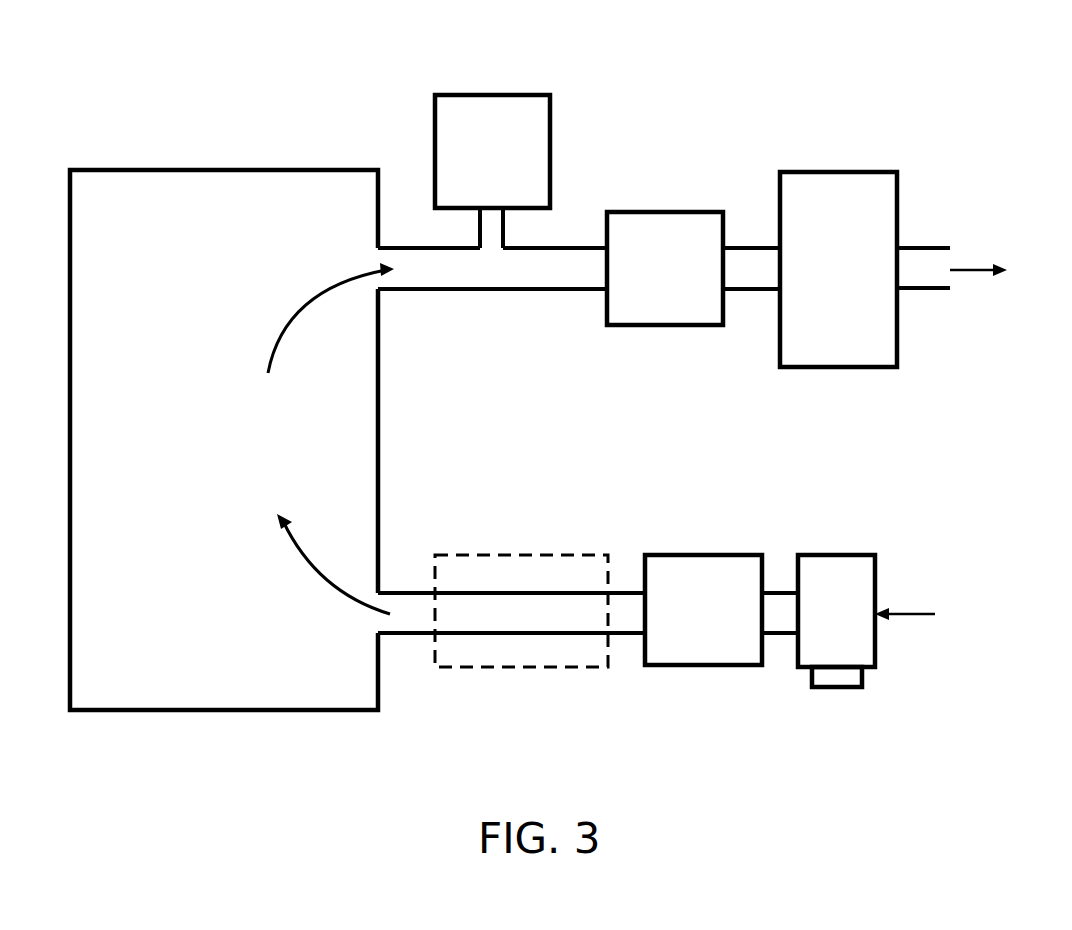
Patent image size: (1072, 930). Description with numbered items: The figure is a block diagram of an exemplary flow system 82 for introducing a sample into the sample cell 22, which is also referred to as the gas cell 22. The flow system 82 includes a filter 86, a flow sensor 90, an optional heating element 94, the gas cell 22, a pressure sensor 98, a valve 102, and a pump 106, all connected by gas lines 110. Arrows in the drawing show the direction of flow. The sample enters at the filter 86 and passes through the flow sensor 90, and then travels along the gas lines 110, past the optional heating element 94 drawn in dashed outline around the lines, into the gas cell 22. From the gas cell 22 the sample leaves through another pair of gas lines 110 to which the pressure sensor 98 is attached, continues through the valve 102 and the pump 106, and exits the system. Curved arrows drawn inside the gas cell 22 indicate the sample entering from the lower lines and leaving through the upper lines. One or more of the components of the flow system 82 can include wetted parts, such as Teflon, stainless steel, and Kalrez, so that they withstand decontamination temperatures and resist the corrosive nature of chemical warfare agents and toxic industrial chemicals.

The flow system 82 is at (207, 92).
The sample cell 22 is at (280, 169).
The pressure sensor 98 is at (495, 95).
The valve 102 is at (643, 212).
The pump 106 is at (822, 172).
The gas lines 110 is at (925, 247).
The heating element 94 is at (522, 668).
The flow sensor 90 is at (688, 668).
The filter 86 is at (830, 688).